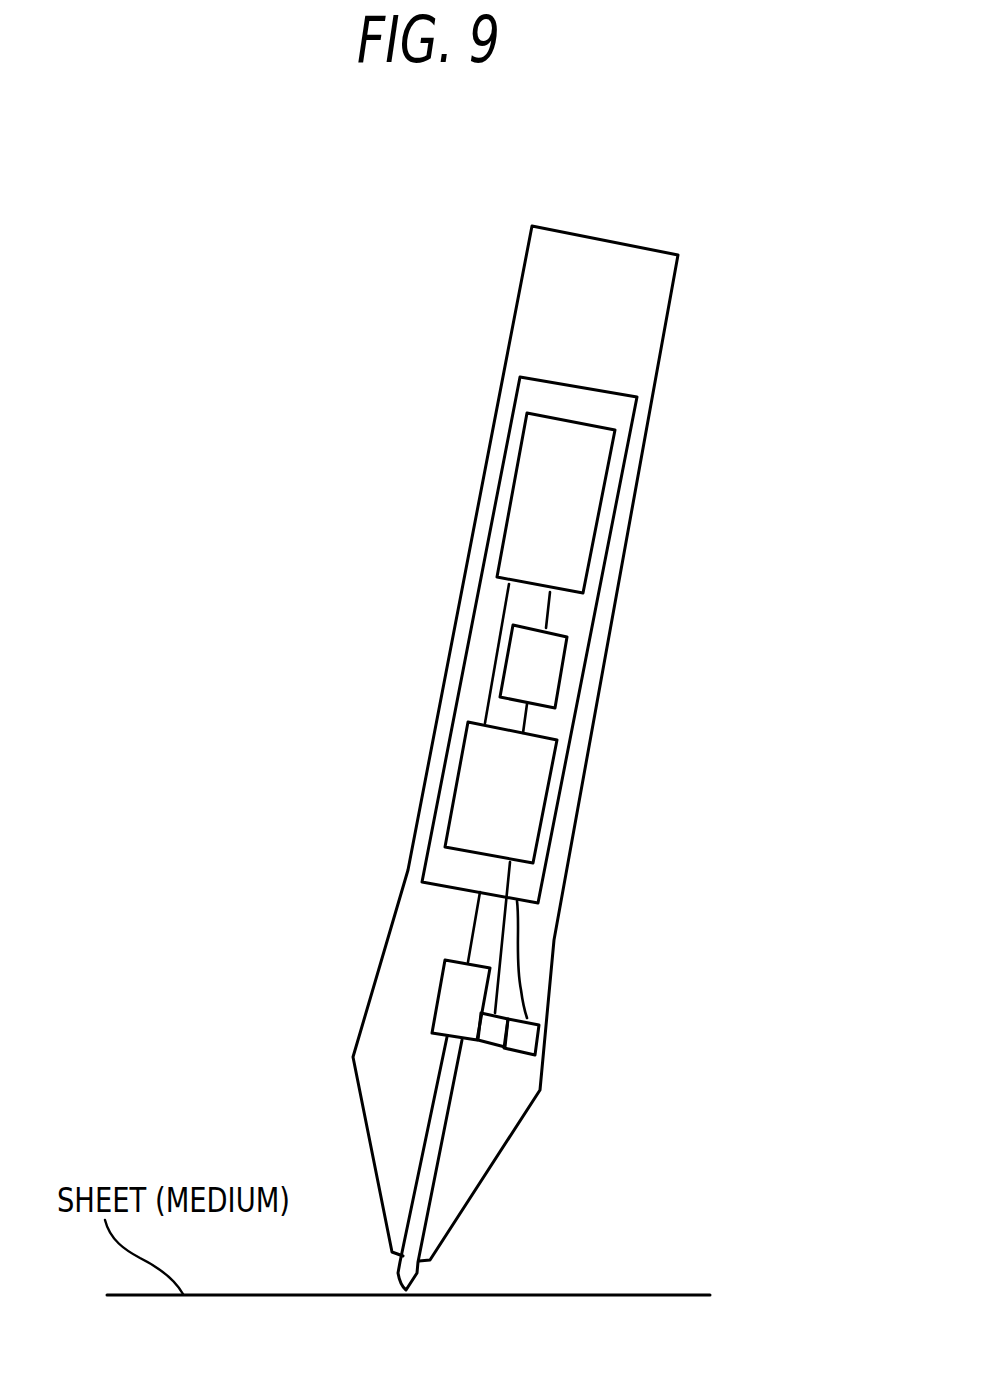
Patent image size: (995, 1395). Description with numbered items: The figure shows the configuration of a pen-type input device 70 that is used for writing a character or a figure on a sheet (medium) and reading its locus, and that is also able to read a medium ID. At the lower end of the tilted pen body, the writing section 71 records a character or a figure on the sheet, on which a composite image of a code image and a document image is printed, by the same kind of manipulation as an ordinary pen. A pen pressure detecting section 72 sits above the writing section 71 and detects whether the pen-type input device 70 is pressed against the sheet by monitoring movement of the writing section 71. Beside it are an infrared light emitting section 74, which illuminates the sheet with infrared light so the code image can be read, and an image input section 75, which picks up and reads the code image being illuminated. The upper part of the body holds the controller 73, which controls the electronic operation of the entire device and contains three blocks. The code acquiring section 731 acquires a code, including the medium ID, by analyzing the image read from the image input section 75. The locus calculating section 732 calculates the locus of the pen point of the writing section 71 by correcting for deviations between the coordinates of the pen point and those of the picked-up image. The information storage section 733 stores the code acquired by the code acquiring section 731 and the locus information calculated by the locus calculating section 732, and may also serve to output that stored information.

The pen-type input device 70 is at (754, 264).
The writing section 71 is at (430, 1203).
The pen pressure detecting section 72 is at (490, 972).
The controller 73 is at (600, 597).
The code acquiring section 731 is at (547, 797).
The locus calculating section 732 is at (565, 672).
The information storage section 733 is at (602, 513).
The infrared light emitting section 74 is at (540, 1036).
The image input section 75 is at (492, 1048).